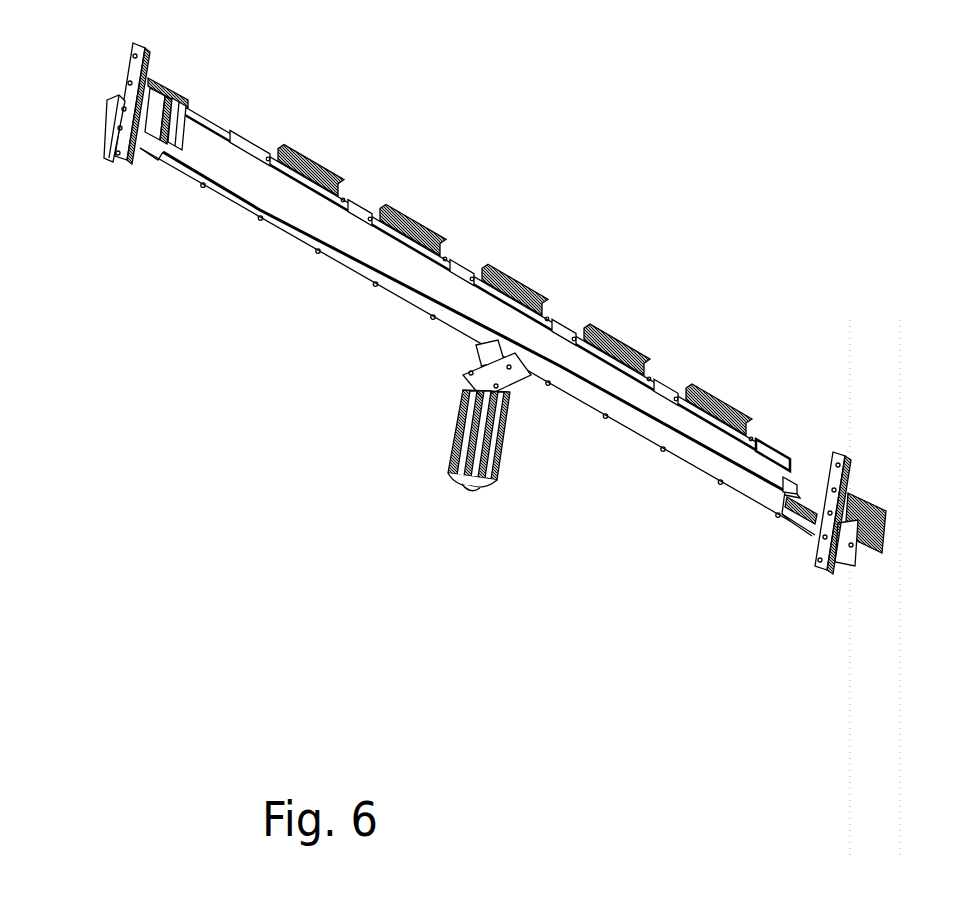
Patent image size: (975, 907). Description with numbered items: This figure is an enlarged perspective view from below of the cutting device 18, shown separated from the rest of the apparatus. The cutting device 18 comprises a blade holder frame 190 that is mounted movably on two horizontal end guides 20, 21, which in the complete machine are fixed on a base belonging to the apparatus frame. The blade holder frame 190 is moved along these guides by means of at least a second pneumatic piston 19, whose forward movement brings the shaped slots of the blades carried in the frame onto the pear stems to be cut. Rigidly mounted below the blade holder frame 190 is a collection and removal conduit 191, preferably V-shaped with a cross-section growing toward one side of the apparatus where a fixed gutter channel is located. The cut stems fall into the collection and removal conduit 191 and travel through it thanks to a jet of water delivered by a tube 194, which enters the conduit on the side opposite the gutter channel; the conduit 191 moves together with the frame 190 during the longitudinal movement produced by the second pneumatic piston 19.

The cutting device 18 is at (567, 189).
The second pneumatic piston 19 is at (500, 462).
The horizontal end guide 20 is at (126, 68).
The horizontal end guide 21 is at (847, 470).
The blade holder frame 190 is at (790, 533).
The collection and removal conduit 191 is at (234, 170).
The tube 194 is at (799, 480).